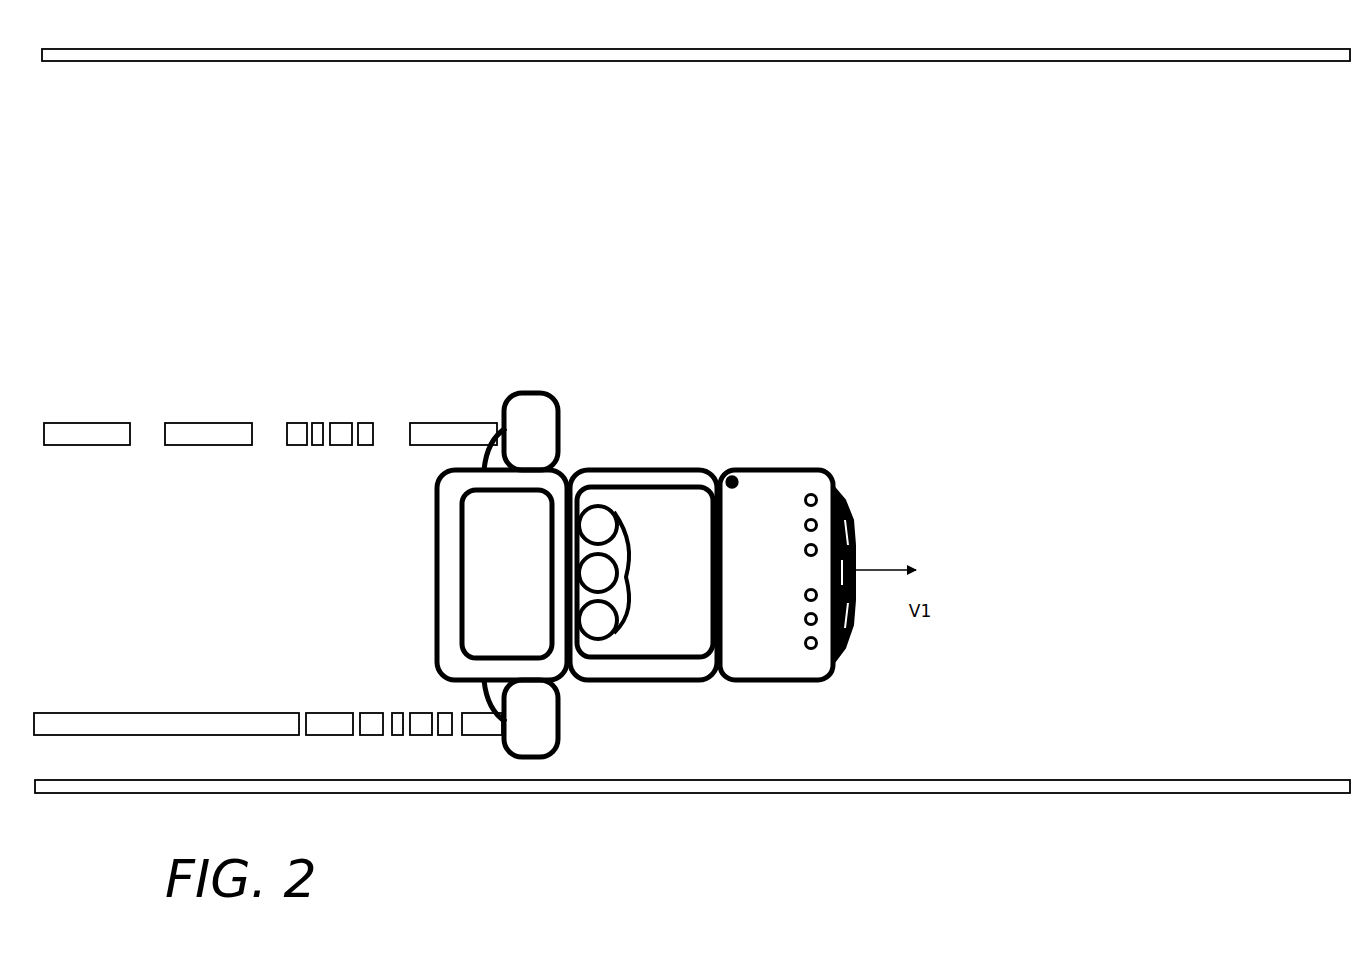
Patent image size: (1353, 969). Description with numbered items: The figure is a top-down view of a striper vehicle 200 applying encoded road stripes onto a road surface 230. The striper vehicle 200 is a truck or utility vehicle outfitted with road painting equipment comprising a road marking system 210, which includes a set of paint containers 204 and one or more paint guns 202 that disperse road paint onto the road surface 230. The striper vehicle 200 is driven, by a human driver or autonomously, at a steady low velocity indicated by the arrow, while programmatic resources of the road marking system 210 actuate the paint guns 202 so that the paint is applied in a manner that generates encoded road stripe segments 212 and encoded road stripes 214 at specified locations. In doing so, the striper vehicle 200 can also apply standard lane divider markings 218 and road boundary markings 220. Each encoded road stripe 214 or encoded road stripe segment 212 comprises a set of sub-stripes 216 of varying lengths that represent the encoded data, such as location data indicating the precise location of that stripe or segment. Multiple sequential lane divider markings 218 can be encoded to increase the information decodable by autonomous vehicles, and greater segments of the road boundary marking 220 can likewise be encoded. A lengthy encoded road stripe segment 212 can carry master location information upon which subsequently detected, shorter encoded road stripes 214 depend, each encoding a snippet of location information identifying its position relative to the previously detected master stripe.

The striper vehicle 200 is at (787, 530).
The paint gun 202 is at (528, 389).
The paint containers 204 is at (638, 506).
The road marking system 210 is at (713, 267).
The encoded road stripe segment 212 is at (457, 698).
The encoded road stripe 214 is at (283, 417).
The sub-stripes 216 is at (362, 450).
The lane divider markings 218 is at (85, 400).
The road boundary marking 220 is at (148, 708).
The road surface 230 is at (1123, 110).